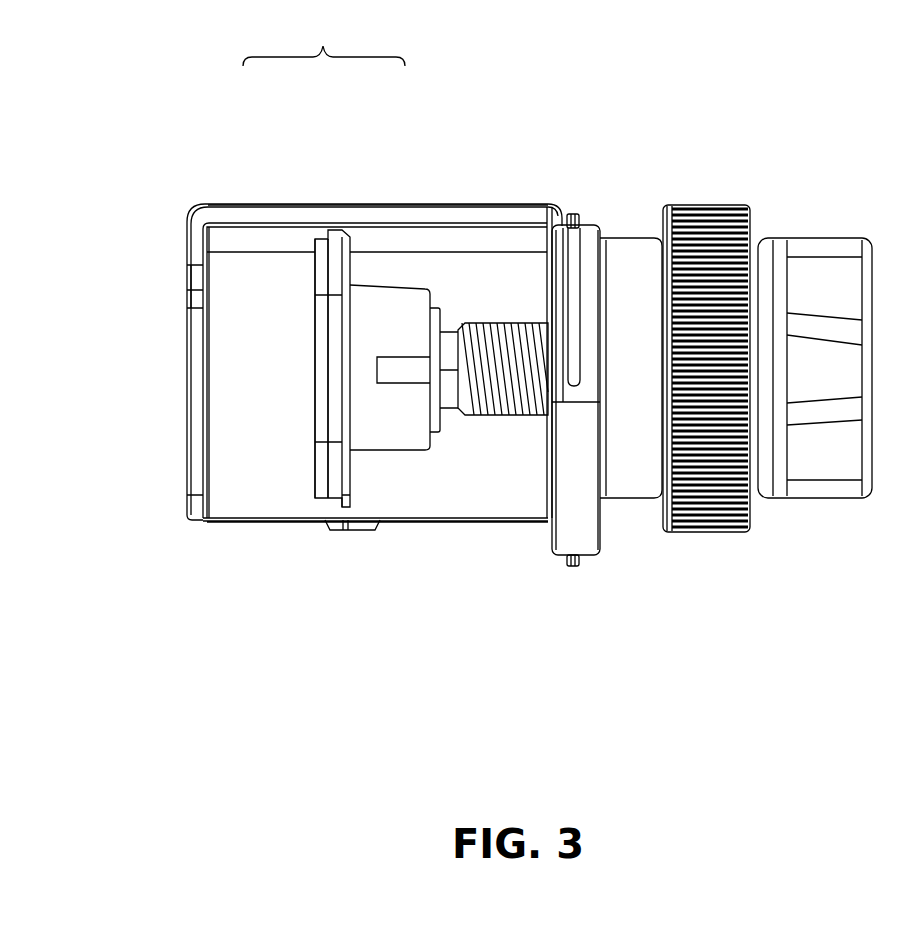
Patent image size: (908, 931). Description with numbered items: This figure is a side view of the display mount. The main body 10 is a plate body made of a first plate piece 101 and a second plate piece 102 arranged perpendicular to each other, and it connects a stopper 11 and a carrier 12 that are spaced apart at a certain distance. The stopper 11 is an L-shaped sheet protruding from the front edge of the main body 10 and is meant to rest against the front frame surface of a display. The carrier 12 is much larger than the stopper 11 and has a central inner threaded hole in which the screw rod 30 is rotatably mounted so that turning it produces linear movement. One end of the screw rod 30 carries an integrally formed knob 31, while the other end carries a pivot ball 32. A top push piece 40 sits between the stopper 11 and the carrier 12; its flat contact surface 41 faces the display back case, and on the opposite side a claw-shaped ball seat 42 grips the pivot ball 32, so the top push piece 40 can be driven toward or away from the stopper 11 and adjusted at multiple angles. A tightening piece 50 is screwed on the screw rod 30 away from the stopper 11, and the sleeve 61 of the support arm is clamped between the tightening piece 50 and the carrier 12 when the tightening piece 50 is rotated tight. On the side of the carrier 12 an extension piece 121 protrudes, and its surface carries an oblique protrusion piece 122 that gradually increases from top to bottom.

The main body 10 is at (324, 37).
The first plate piece 101 is at (375, 215).
The second plate piece 102 is at (268, 340).
The stopper 11 is at (197, 243).
The carrier 12 is at (550, 285).
The extension piece 121 is at (590, 267).
The oblique protrusion piece 122 is at (574, 236).
The screw rod 30 is at (512, 410).
The knob 31 is at (825, 458).
The pivot ball 32 is at (412, 367).
The top push piece 40 is at (335, 473).
The contact surface 41 is at (322, 395).
The claw-shaped ball seat 42 is at (387, 415).
The tightening piece 50 is at (718, 205).
The sleeve 61 is at (627, 483).